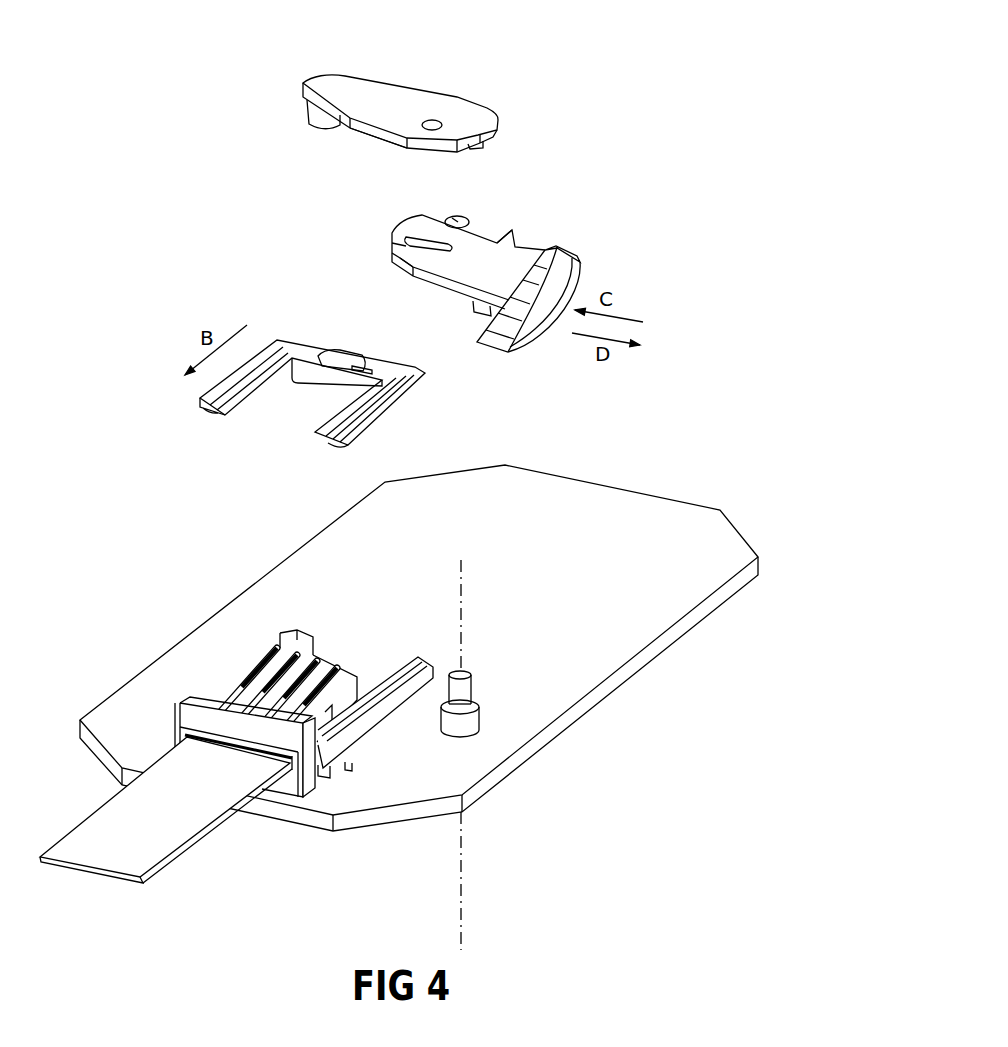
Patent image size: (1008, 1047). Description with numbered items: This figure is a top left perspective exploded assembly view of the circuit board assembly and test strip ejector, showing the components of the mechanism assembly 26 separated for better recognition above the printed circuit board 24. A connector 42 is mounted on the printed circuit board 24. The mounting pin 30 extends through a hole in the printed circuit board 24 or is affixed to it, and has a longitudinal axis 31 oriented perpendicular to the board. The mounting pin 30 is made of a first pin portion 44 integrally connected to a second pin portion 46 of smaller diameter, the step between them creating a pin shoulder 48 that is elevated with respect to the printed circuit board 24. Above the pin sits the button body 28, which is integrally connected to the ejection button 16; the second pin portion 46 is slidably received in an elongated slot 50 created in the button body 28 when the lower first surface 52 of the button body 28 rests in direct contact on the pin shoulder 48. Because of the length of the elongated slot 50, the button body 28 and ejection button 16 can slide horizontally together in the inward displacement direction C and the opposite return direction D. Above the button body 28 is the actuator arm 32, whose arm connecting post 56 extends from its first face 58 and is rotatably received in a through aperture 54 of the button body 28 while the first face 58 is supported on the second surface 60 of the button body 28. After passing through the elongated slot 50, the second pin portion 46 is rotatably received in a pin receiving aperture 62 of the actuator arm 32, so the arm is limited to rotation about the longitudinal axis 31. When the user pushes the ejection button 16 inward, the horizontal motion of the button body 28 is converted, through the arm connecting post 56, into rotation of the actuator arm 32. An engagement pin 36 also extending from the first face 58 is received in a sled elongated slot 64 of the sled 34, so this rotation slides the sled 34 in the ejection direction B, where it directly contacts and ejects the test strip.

The ejection button 16 is at (563, 281).
The printed circuit board 24 is at (708, 530).
The mechanism assembly 26 is at (628, 130).
The button body 28 is at (484, 254).
The mounting pin 30 is at (541, 727).
The longitudinal axis 31 is at (463, 877).
The actuator arm 32 is at (404, 121).
The sled 34 is at (320, 376).
The engagement pin 36 is at (312, 118).
The connector 42 is at (227, 680).
The first pin portion 44 is at (467, 727).
The second pin portion 46 is at (465, 688).
The pin shoulder 48 is at (488, 713).
The elongated slot 50 is at (392, 251).
The first surface 52 is at (407, 267).
The through aperture 54 is at (455, 215).
The arm connecting post 56 is at (470, 140).
The first face 58 is at (370, 137).
The second surface 60 is at (493, 224).
The pin receiving aperture 62 is at (437, 120).
The sled elongated slot 64 is at (343, 355).